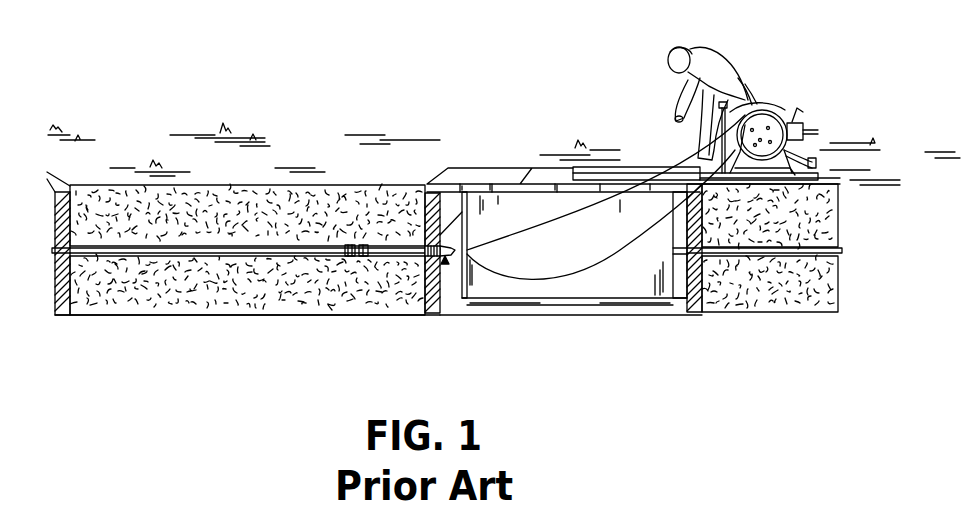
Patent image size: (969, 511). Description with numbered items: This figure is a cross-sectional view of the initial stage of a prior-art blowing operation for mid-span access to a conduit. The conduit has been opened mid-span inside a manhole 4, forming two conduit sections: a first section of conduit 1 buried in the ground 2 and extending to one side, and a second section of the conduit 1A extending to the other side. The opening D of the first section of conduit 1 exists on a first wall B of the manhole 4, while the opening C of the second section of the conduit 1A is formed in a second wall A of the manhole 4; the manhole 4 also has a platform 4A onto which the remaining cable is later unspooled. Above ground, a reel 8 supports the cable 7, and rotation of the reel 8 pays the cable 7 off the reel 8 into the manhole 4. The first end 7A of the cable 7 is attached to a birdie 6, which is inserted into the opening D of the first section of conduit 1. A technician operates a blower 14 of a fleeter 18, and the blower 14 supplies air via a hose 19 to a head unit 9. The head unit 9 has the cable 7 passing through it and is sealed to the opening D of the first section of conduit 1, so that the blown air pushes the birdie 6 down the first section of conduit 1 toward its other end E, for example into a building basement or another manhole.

The first section of conduit 1 is at (262, 253).
The second section of the conduit 1A is at (787, 252).
The ground 2 is at (280, 207).
The manhole 4 is at (492, 283).
The platform 4A is at (481, 178).
The birdie 6 is at (344, 250).
The cable 7 is at (397, 247).
The first end of the cable 7A is at (372, 252).
The reel 8 is at (763, 117).
The head unit 9 is at (444, 258).
The blower 14 is at (808, 158).
The fleeter 18 is at (797, 90).
The hose 19 is at (800, 150).
The second wall of the manhole A is at (682, 289).
The first wall of the manhole B is at (459, 281).
The opening of the second section of the conduit C is at (686, 260).
The opening of the first section of conduit D is at (443, 241).
The other end of the first section of the conduit E is at (54, 250).